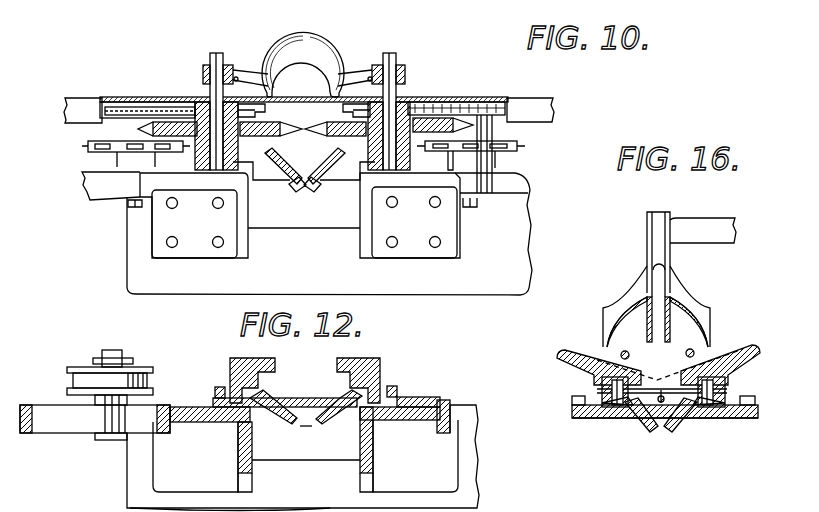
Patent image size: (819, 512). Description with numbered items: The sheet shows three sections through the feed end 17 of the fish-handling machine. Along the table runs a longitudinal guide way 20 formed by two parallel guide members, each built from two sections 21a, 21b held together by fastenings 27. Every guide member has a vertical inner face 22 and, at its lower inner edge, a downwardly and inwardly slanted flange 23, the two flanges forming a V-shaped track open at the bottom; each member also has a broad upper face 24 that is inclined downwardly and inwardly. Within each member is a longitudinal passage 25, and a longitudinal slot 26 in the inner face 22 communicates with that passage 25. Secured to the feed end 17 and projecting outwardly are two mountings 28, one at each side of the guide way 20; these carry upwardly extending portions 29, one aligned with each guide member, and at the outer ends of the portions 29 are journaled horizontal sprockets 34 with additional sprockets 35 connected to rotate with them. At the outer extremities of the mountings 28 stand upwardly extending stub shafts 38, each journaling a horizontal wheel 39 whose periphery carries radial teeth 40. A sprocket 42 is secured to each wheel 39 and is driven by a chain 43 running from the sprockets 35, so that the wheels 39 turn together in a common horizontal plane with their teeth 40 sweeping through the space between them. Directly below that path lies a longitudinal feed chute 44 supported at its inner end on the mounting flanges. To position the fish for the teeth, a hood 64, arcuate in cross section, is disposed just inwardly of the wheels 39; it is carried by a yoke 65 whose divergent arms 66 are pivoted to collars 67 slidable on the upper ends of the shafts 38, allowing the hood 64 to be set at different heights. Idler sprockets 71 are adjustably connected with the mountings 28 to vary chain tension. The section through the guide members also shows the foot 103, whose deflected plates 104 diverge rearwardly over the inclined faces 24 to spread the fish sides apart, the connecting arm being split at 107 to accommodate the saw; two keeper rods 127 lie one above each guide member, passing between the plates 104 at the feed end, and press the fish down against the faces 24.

In FIG. 10, the feed end 17 is at (505, 262).
In FIG. 12, the feed end 17 is at (478, 483).
In FIG. 12, the longitudinal guide way 20 is at (310, 408).
In FIG. 16, the longitudinal guide way 20 is at (661, 425).
In FIG. 12, the guide member section 21a is at (387, 376).
In FIG. 16, the guide member section 21a is at (730, 393).
In FIG. 12, the guide member section 21b is at (352, 412).
In FIG. 16, the guide member section 21b is at (758, 411).
In FIG. 16, the vertical inner face 22 is at (602, 383).
In FIG. 16, the slanted flange 23 is at (684, 405).
In FIG. 16, the upper face 24 is at (573, 350).
In FIG. 16, the passage 25 is at (600, 394).
In FIG. 16, the longitudinal slot 26 is at (630, 418).
In FIG. 12, the fastenings 27 is at (215, 390).
In FIG. 16, the fastenings 27 is at (575, 410).
In FIG. 12, the mountings 28 is at (227, 417).
In FIG. 12, the upwardly extending portions 29 is at (230, 376).
In FIG. 10, the horizontal sprockets 34 is at (150, 147).
In FIG. 10, the additional sprockets 35 is at (187, 58).
In FIG. 10, the stub shafts 38 is at (212, 178).
In FIG. 10, the horizontal wheel 39 is at (175, 133).
In FIG. 10, the radial teeth 40 is at (153, 130).
In FIG. 10, the sprocket 42 is at (202, 66).
In FIG. 10, the chains 43 is at (117, 141).
In FIG. 10, the longitudinal feed chute 44 is at (304, 190).
In FIG. 10, the hood 64 is at (318, 48).
In FIG. 10, the yoke 65 is at (356, 70).
In FIG. 10, the divergent arms 66 is at (237, 72).
In FIG. 10, the collars 67 is at (405, 72).
In FIG. 12, the idler sprockets 71 is at (87, 380).
In FIG. 16, the foot 103 is at (698, 293).
In FIG. 16, the plates 104 is at (672, 288).
In FIG. 16, the split 107 is at (660, 281).
In FIG. 16, the keeper rods 127 is at (705, 347).